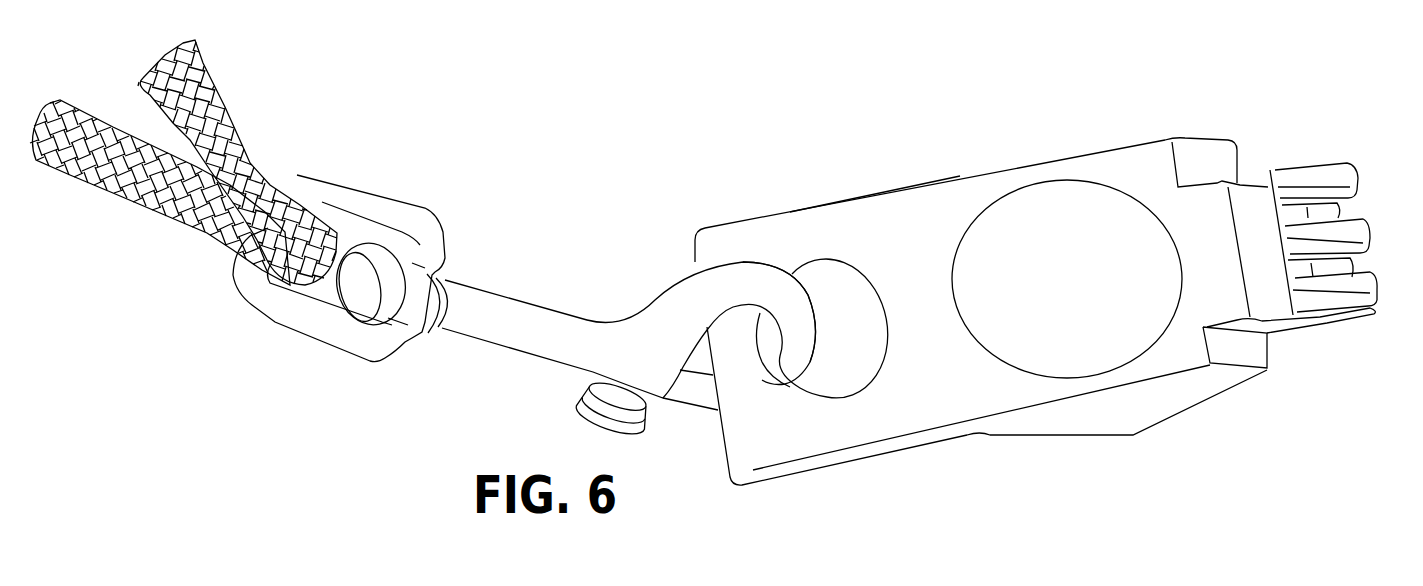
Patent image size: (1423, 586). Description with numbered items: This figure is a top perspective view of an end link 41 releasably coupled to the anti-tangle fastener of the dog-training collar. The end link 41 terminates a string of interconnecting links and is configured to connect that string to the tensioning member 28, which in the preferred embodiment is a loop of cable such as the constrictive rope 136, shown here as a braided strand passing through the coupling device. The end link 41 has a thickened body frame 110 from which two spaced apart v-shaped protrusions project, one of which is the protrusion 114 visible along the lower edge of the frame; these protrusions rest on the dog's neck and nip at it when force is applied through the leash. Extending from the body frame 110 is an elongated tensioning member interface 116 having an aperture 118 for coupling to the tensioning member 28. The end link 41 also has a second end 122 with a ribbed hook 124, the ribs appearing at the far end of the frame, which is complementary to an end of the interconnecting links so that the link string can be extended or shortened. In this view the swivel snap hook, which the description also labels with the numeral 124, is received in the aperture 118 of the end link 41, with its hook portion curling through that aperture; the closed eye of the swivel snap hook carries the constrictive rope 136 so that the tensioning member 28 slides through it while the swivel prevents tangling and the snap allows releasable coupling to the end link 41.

The constrictive rope 136 is at (265, 132).
The tensioning member 28 is at (422, 148).
The ribbed hook 124 is at (623, 323).
The tensioning member interface 116 is at (778, 217).
The aperture 118 is at (827, 270).
The end link 41 is at (970, 173).
The thickened body frame 110 is at (981, 282).
The v-shaped protrusion 114 is at (1137, 437).
The second end 122 is at (1318, 392).